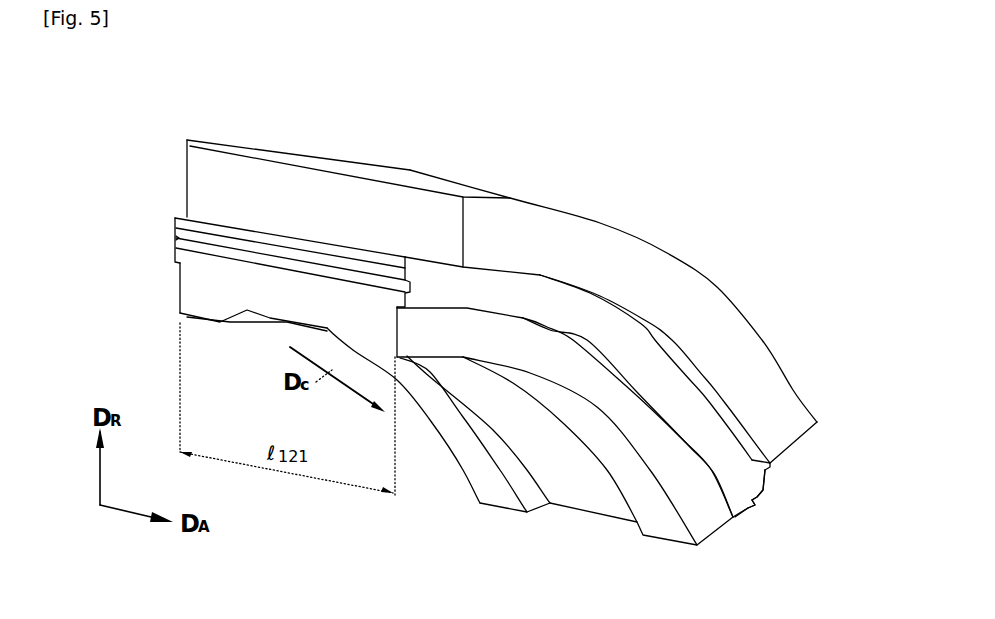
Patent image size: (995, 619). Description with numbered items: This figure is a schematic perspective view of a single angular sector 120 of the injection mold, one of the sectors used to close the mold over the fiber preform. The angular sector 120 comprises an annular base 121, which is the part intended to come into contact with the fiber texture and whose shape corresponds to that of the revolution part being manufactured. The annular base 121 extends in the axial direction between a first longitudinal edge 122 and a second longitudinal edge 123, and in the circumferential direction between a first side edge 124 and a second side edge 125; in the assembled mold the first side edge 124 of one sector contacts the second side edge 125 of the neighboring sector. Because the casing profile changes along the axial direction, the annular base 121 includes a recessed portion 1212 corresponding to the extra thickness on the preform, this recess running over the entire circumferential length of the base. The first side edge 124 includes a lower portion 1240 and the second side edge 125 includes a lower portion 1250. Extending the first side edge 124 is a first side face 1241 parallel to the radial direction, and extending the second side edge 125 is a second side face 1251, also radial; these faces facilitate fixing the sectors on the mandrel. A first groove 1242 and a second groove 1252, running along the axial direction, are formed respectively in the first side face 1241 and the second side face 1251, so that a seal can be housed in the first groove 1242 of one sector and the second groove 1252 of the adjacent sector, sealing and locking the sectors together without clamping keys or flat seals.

The angular sector 120 is at (586, 156).
The annular base 121 is at (492, 510).
The recessed portion 1212 is at (573, 490).
The first longitudinal edge 122 is at (680, 482).
The second longitudinal edge 123 is at (172, 225).
The first side edge 124 is at (180, 293).
The lower portion 1240 is at (212, 312).
The first side face 1241 is at (172, 230).
The first groove 1242 is at (172, 253).
The second side edge 125 is at (700, 547).
The lower portion 1250 is at (723, 530).
The second side face 1251 is at (757, 503).
The second groove 1252 is at (750, 510).